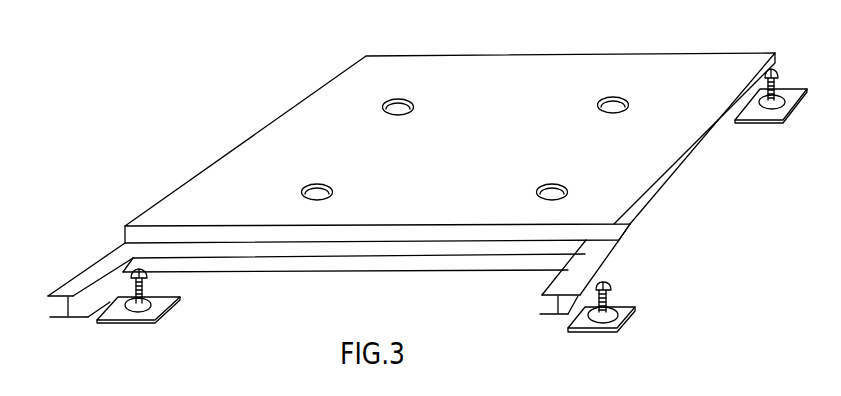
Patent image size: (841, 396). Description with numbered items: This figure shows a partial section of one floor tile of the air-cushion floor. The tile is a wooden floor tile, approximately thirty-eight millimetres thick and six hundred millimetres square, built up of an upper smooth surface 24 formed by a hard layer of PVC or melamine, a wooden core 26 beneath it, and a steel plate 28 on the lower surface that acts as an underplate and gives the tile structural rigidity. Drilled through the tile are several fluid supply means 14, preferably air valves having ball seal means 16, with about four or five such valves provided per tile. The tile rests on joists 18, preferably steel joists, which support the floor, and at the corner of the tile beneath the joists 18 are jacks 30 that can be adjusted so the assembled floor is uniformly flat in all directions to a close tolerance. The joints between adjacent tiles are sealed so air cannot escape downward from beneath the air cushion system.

The fluid supply means 14 is at (302, 191).
The ball seal means 16 is at (318, 185).
The joists 18 is at (72, 293).
The upper smooth surface 24 is at (655, 184).
The wooden core 26 is at (620, 231).
The steel plate 28 is at (541, 240).
The jacks 30 is at (170, 306).